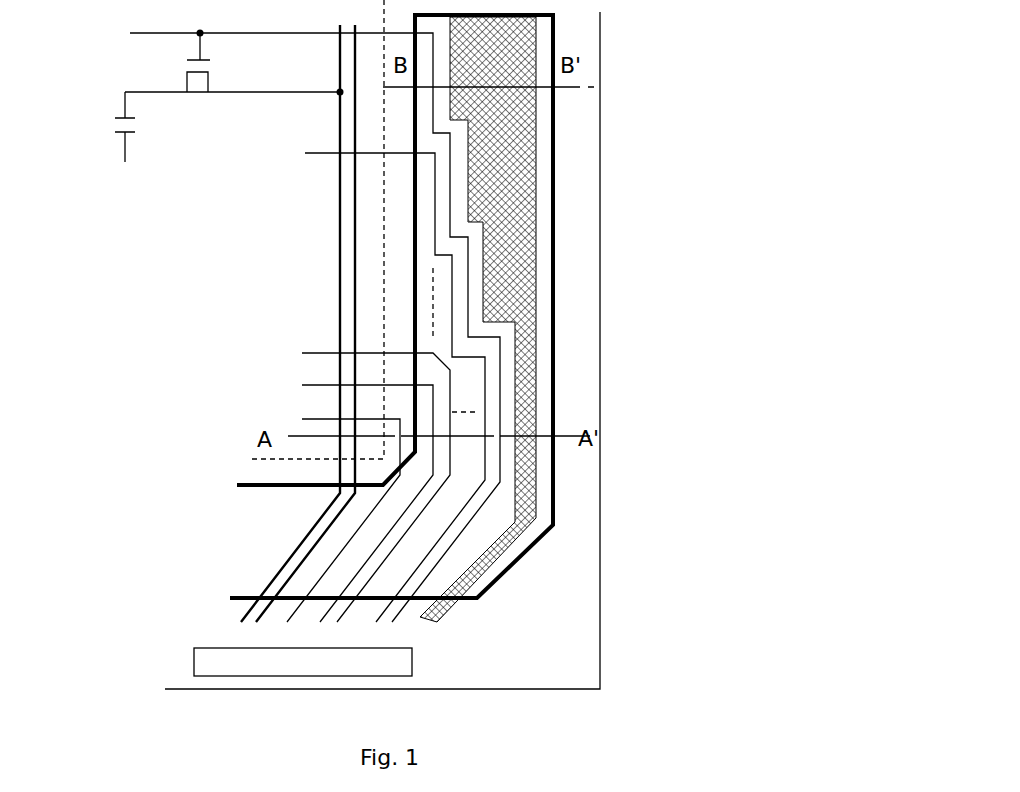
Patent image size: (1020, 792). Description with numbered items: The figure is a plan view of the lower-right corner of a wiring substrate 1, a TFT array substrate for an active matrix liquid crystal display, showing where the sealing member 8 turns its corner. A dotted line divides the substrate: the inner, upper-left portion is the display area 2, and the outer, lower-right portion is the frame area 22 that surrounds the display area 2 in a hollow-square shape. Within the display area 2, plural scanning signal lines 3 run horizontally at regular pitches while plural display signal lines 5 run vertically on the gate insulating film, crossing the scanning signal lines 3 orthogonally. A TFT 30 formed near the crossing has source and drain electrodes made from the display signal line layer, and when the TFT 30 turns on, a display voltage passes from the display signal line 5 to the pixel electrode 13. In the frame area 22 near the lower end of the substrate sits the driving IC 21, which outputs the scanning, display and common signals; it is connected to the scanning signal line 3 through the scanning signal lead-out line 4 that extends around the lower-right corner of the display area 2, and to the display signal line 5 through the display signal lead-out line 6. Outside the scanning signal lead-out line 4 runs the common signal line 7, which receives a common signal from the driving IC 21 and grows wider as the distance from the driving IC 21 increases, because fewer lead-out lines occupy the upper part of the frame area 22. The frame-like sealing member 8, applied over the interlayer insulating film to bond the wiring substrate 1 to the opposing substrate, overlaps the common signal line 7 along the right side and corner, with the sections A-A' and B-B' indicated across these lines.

The wiring substrate 1 is at (590, 338).
The display area 2 is at (363, 253).
The scanning signal line 3 is at (313, 352).
The scanning signal lead-out line 4 is at (482, 402).
The display signal line 5 is at (338, 215).
The display signal lead-out line 6 is at (298, 545).
The common signal line 7 is at (533, 285).
The sealing member 8 is at (553, 193).
The pixel electrode 13 is at (112, 125).
The driving IC 21 is at (206, 652).
The frame area 22 is at (250, 472).
The TFT 30 is at (163, 70).